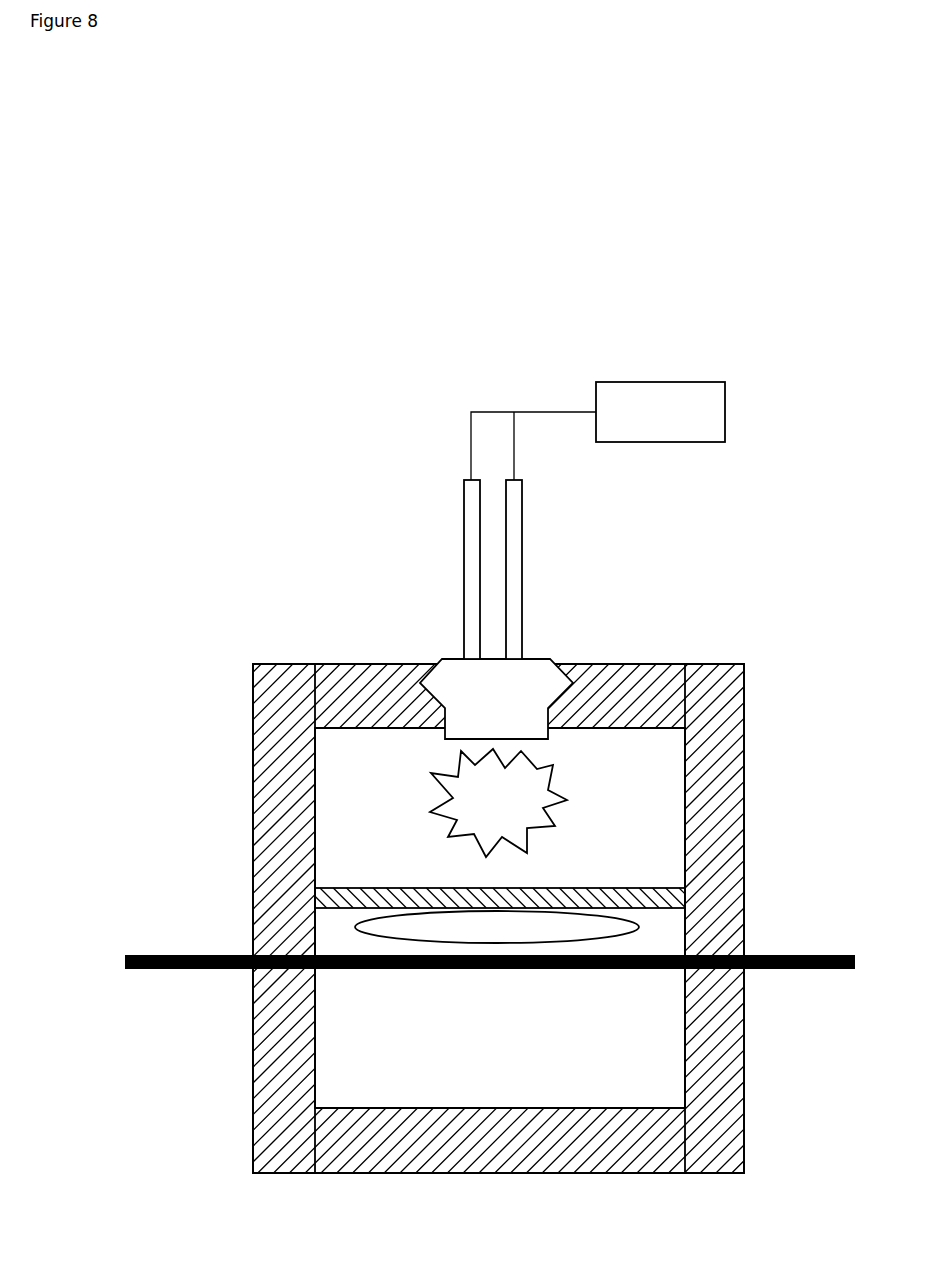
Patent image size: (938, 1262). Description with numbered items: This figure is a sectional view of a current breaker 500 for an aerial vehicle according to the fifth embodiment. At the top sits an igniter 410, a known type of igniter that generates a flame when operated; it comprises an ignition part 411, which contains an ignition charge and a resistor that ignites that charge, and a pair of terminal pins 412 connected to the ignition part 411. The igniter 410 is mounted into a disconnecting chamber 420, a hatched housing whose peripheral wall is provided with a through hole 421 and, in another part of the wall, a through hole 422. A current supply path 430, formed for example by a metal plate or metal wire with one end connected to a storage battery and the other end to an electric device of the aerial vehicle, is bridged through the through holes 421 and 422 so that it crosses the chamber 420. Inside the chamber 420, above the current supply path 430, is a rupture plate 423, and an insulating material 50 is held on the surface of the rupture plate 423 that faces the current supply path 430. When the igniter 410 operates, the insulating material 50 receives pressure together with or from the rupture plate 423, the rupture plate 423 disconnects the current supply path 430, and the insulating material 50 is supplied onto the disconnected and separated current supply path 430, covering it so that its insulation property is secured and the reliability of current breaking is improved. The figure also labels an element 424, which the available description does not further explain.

The current breaker for an aerial vehicle 500 is at (522, 232).
The igniter 410 is at (490, 609).
The ignition part 411 is at (453, 670).
The terminal pins 412 is at (473, 513).
The disconnecting chamber 420 is at (287, 685).
The through hole 421 is at (273, 955).
The through hole 422 is at (712, 942).
The rupture plate 423 is at (343, 888).
The controller 424 is at (642, 382).
The current supply path 430 is at (153, 970).
The insulating material 50 is at (607, 923).